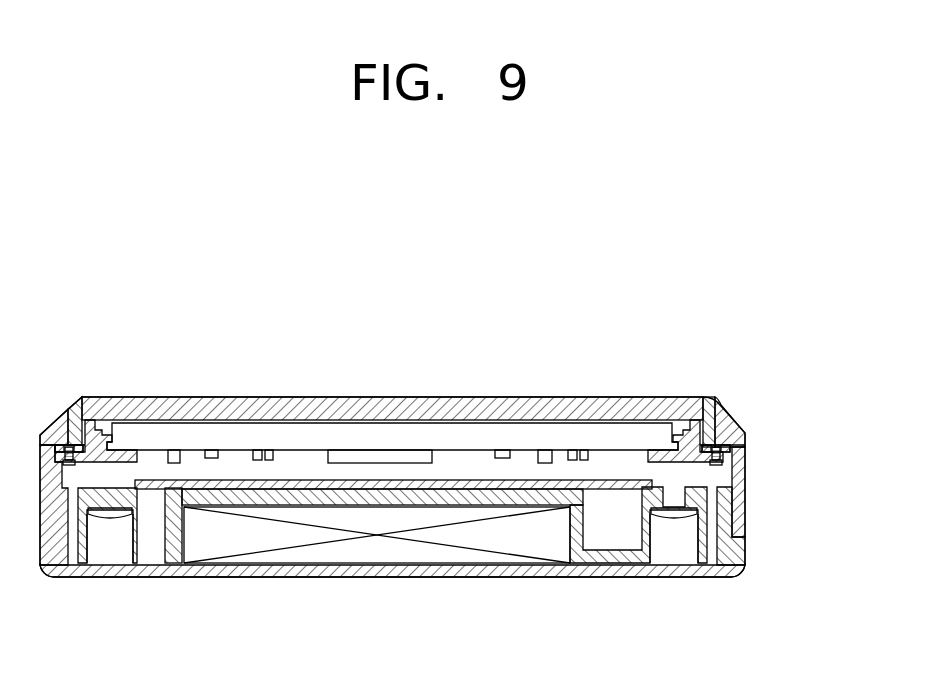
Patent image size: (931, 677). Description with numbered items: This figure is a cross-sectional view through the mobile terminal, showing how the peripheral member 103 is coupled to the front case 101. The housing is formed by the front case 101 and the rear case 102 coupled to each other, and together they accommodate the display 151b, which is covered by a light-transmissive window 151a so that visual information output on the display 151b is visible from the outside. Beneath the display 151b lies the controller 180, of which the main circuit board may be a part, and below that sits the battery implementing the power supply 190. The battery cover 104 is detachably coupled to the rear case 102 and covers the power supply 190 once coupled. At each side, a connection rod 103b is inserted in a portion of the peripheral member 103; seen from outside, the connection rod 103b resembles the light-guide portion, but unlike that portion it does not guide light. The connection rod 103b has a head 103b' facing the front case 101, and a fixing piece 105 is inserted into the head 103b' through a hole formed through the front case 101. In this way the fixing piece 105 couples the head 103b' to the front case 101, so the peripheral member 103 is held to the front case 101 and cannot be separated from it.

The front case 101 is at (745, 473).
The rear case 102 is at (722, 508).
The peripheral member 103 is at (730, 430).
The connection rod 103b is at (733, 388).
The head 103b' is at (778, 422).
The battery cover 104 is at (562, 570).
The fixing piece 105 is at (728, 452).
The window 151a is at (393, 408).
The display 151b is at (238, 428).
The controller 180 is at (473, 480).
The power supply 190 is at (360, 547).